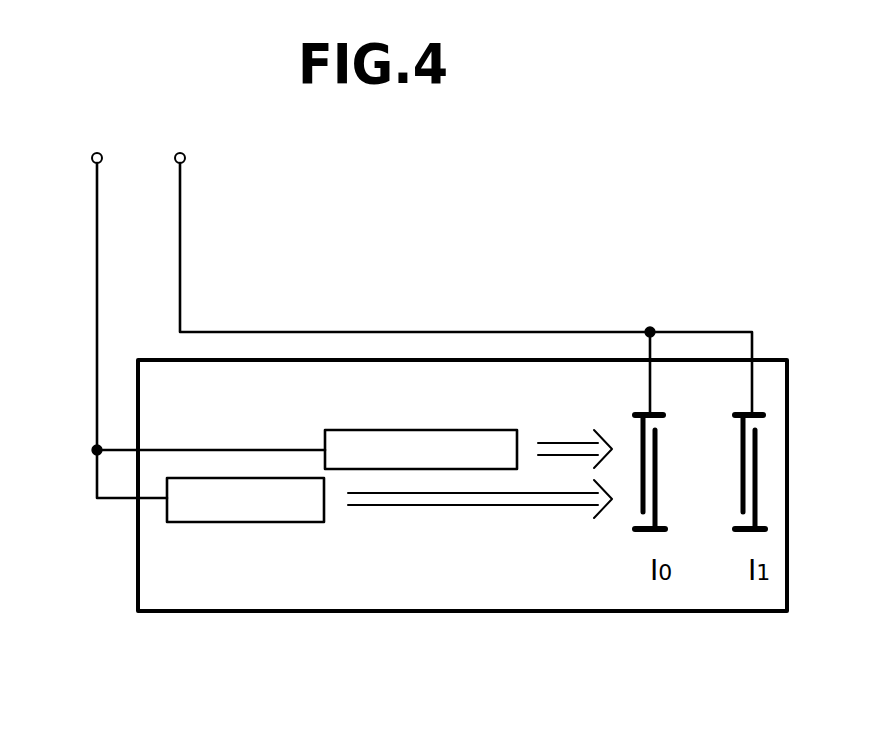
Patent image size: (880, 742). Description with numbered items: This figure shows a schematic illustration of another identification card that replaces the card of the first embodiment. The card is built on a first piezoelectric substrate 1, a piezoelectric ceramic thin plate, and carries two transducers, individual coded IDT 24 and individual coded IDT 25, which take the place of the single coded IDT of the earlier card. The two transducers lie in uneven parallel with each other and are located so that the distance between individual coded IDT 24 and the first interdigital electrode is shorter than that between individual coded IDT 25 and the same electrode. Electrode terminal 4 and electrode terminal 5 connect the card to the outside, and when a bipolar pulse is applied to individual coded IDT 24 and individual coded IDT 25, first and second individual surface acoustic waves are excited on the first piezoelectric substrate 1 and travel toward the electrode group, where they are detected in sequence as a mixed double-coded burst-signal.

The first piezoelectric substrate 1 is at (157, 572).
The electrode terminal 4 is at (189, 316).
The electrode terminal 5 is at (463, 273).
The individual coded IDT 24 is at (370, 450).
The individual coded IDT 25 is at (230, 500).